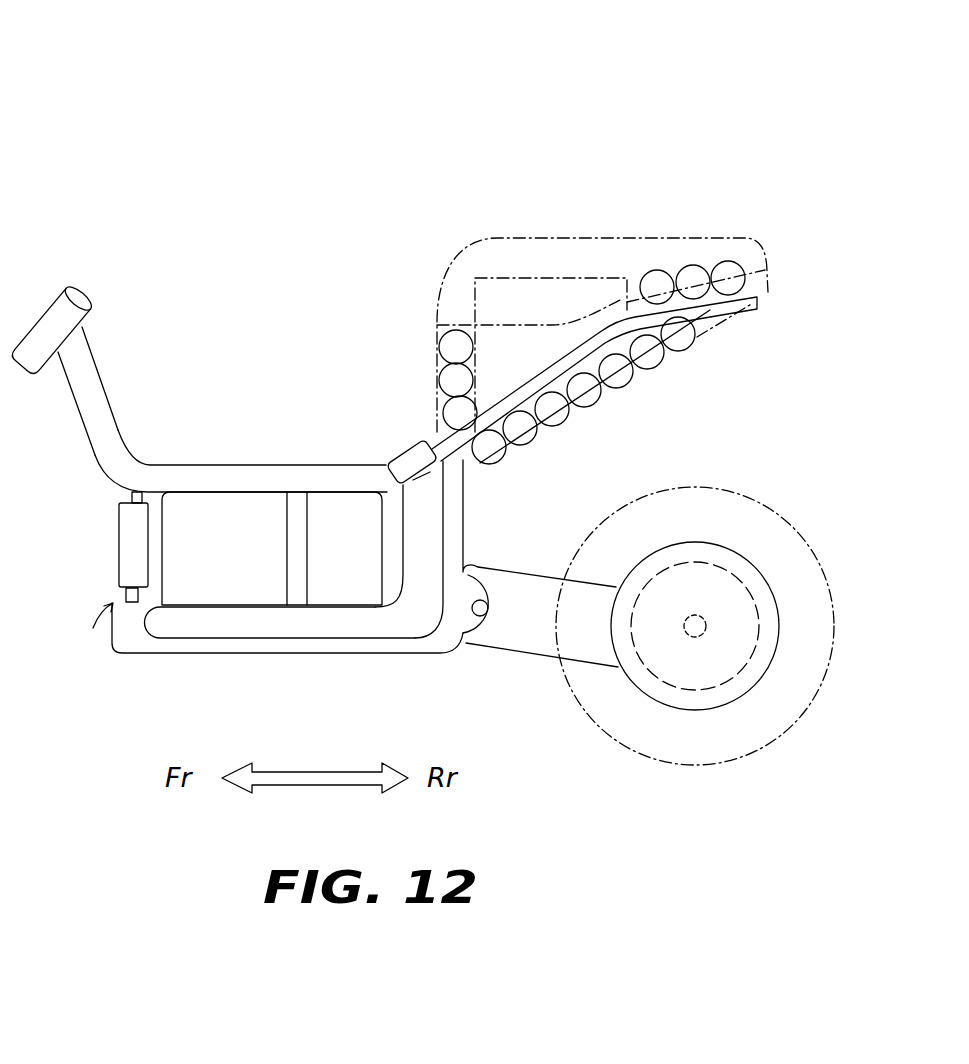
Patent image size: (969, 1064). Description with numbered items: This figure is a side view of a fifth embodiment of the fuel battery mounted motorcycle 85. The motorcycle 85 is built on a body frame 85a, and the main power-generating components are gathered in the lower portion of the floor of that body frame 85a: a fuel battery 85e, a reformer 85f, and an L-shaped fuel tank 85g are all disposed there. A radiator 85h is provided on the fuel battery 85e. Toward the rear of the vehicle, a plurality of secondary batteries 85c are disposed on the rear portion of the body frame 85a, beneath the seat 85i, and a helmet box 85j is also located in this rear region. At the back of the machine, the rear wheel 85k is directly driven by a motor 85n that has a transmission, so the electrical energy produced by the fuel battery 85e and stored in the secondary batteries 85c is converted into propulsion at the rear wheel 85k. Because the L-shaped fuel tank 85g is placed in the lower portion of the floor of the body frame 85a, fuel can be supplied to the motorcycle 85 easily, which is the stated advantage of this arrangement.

The fuel battery mounted motorcycle 85 is at (188, 91).
The body frame 85a is at (97, 373).
The secondary batteries 85c is at (602, 396).
The fuel battery 85e is at (210, 520).
The reformer 85f is at (332, 512).
The L-shaped fuel tank 85g is at (430, 520).
The radiator 85h is at (118, 536).
The seat 85i is at (540, 240).
The helmet box 85j is at (556, 277).
The rear wheel 85k is at (713, 487).
The motor 85n is at (737, 578).